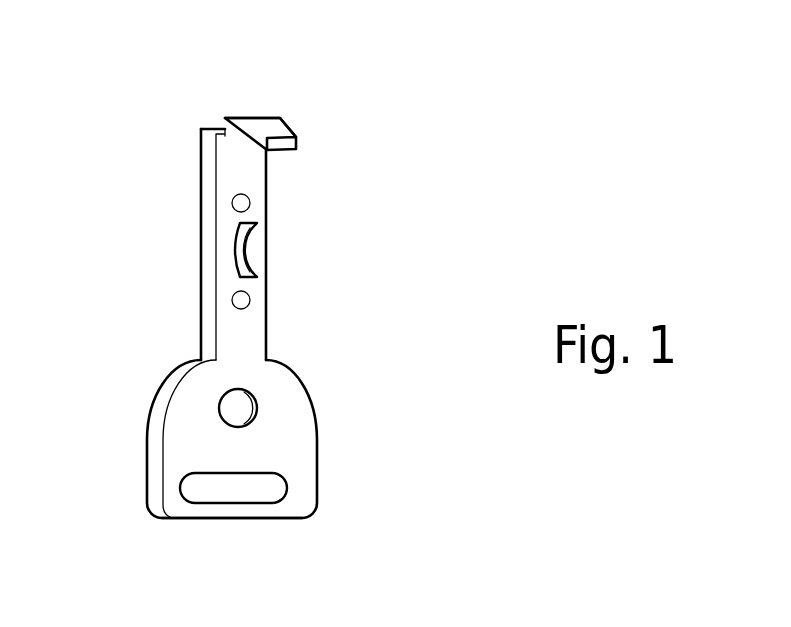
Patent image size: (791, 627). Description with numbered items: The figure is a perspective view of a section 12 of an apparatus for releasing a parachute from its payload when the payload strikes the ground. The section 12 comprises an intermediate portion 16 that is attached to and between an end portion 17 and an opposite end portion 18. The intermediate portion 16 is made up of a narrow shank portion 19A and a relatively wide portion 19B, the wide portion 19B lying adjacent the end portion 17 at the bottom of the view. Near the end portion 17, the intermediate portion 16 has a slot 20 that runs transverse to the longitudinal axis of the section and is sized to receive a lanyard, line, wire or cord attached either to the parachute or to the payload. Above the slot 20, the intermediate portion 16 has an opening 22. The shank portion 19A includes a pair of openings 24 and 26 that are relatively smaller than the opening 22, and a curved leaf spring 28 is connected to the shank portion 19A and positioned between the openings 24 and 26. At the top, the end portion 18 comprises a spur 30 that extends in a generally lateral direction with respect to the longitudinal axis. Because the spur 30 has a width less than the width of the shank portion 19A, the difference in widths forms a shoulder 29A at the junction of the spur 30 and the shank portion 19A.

The section 12 is at (372, 93).
The intermediate portion 16 is at (113, 133).
The end portion 17 is at (190, 520).
The end portion 18 is at (245, 117).
The shank portion 19A is at (201, 230).
The relatively wide portion 19B is at (148, 422).
The slot 20 is at (270, 493).
The opening 22 is at (250, 410).
The opening 24 is at (250, 202).
The opening 26 is at (243, 300).
The curved leaf spring 28 is at (243, 248).
The shoulder 29A is at (217, 127).
The spur 30 is at (277, 118).